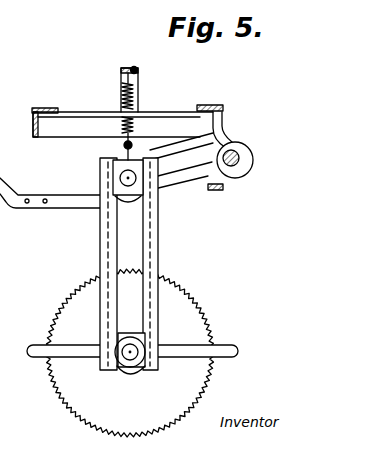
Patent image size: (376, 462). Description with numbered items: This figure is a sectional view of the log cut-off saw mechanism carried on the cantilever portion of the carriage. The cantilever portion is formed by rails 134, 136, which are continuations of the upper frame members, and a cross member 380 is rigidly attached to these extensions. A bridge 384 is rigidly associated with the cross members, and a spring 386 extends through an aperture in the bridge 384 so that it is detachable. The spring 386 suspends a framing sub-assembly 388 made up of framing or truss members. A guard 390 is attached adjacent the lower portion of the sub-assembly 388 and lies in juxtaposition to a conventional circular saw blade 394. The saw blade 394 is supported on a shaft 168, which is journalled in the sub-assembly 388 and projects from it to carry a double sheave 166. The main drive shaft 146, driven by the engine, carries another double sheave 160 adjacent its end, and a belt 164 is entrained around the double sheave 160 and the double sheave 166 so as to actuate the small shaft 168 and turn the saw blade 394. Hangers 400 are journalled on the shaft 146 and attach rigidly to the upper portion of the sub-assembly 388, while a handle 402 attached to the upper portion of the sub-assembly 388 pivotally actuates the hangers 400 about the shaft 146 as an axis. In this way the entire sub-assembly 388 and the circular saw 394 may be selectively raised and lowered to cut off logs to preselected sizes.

The rail 134 is at (216, 104).
The rail 136 is at (42, 108).
The main drive shaft 146 is at (234, 146).
The double sheave 160 is at (242, 174).
The belt 164 is at (181, 150).
The double sheave 166 is at (130, 331).
The shaft 168 is at (132, 373).
The cross member 380 is at (155, 118).
The bridge 384 is at (120, 68).
The spring 386 is at (137, 92).
The framing sub-assembly 388 is at (88, 237).
The guard 390 is at (226, 342).
The circular saw blade 394 is at (193, 378).
The hanger 400 is at (222, 132).
The handle 402 is at (52, 197).